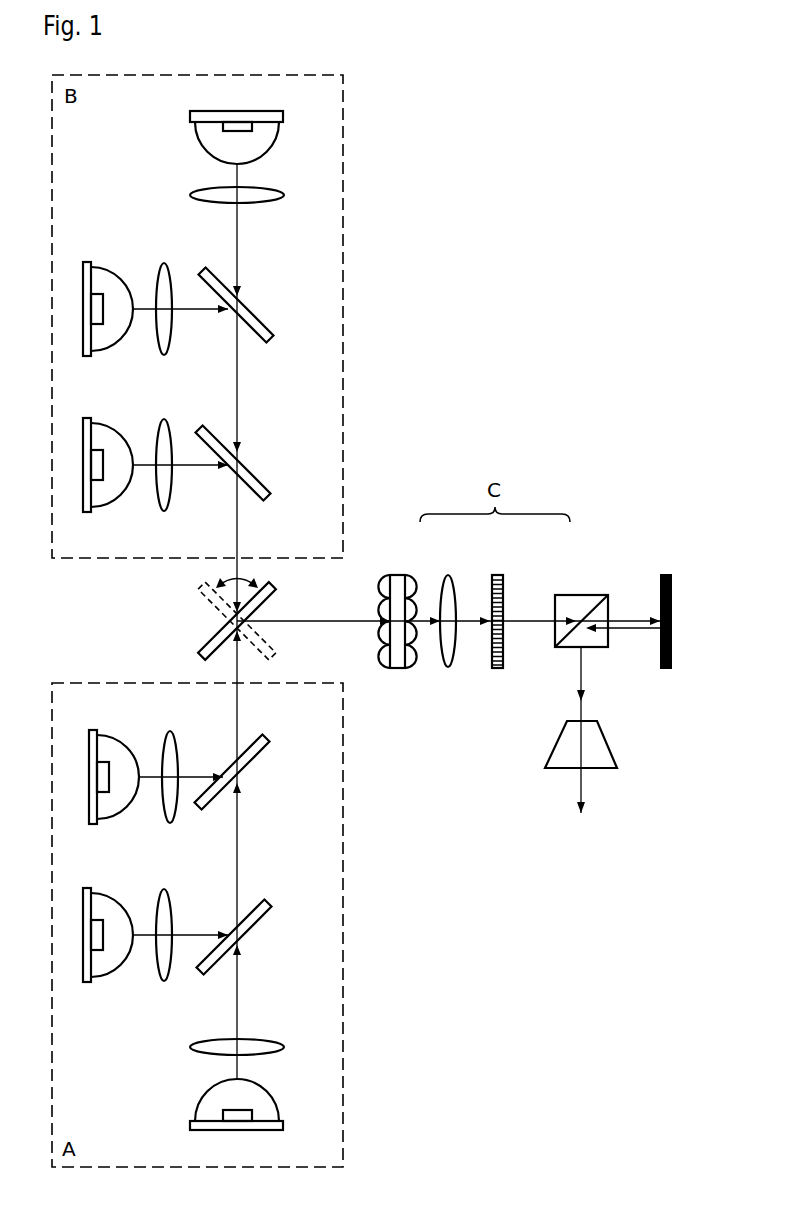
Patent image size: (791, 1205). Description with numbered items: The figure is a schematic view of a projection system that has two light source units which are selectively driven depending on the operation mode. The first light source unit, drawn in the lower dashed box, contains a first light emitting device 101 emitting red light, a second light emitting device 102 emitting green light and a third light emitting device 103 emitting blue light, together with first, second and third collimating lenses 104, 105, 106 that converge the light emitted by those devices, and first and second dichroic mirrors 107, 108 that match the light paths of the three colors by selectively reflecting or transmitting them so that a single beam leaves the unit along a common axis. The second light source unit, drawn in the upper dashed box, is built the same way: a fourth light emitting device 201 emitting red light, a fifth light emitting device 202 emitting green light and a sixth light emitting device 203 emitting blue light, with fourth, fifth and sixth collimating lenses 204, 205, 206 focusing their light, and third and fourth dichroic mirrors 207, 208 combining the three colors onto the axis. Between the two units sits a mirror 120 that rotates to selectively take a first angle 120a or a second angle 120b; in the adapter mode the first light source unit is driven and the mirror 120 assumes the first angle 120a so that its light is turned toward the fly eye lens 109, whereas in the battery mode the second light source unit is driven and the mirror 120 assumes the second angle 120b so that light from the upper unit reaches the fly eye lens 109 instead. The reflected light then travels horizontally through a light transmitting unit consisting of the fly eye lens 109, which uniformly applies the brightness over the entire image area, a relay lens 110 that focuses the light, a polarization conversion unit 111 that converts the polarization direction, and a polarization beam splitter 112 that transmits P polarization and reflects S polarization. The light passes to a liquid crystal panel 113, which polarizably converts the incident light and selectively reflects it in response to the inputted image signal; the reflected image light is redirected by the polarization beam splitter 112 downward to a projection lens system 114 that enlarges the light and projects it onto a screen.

The first light emitting device 101 is at (125, 738).
The second light emitting device 102 is at (108, 891).
The third light emitting device 103 is at (270, 1084).
The first collimating lens 104 is at (178, 740).
The second collimating lens 105 is at (170, 893).
The third collimating lens 106 is at (258, 1040).
The first dichroic mirror 107 is at (253, 903).
The second dichroic mirror 108 is at (258, 756).
The fly eye lens 109 is at (397, 572).
The relay lens 110 is at (448, 573).
The polarization conversion unit 111 is at (497, 573).
The polarization beam splitter 112 is at (576, 595).
The liquid crystal panel 113 is at (668, 573).
The projection lens system 114 is at (600, 730).
The mirror 120 is at (116, 584).
The first angle 120a is at (207, 640).
The second angle 120b is at (207, 598).
The fourth light emitting device 201 is at (108, 512).
The fifth light emitting device 202 is at (108, 357).
The sixth light emitting device 203 is at (272, 148).
The fourth collimating lens 204 is at (172, 509).
The fifth collimating lens 205 is at (172, 352).
The sixth collimating lens 206 is at (262, 203).
The third dichroic mirror 207 is at (262, 336).
The fourth dichroic mirror 208 is at (257, 478).